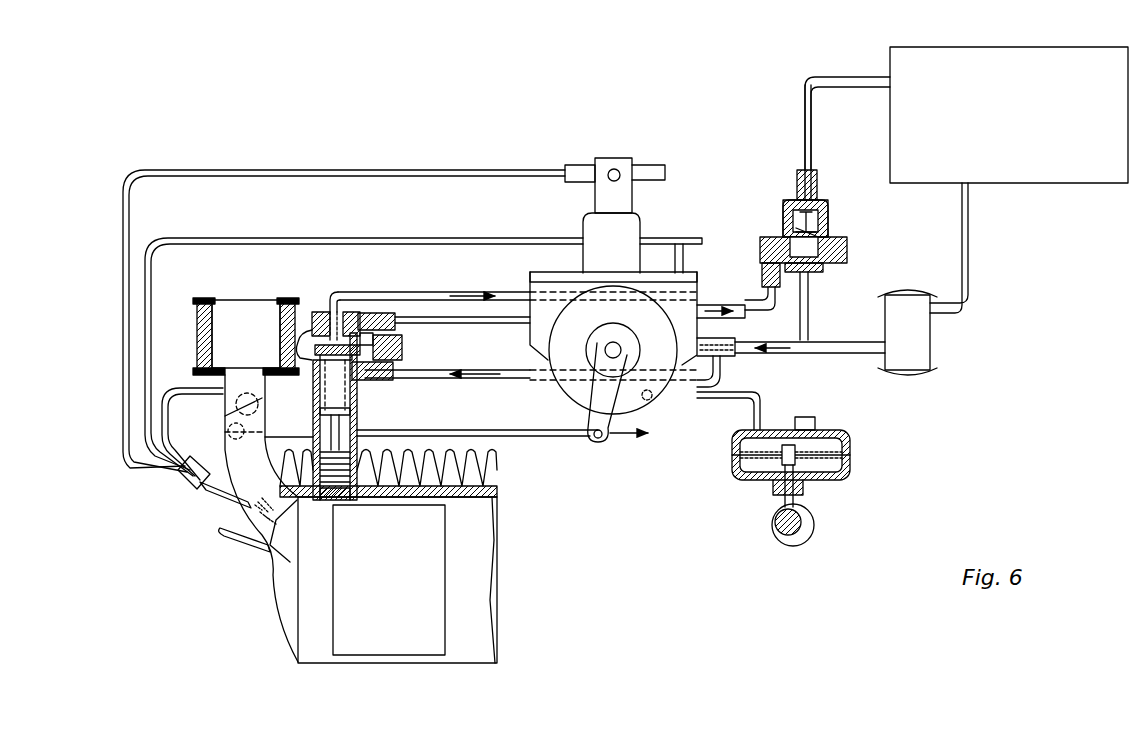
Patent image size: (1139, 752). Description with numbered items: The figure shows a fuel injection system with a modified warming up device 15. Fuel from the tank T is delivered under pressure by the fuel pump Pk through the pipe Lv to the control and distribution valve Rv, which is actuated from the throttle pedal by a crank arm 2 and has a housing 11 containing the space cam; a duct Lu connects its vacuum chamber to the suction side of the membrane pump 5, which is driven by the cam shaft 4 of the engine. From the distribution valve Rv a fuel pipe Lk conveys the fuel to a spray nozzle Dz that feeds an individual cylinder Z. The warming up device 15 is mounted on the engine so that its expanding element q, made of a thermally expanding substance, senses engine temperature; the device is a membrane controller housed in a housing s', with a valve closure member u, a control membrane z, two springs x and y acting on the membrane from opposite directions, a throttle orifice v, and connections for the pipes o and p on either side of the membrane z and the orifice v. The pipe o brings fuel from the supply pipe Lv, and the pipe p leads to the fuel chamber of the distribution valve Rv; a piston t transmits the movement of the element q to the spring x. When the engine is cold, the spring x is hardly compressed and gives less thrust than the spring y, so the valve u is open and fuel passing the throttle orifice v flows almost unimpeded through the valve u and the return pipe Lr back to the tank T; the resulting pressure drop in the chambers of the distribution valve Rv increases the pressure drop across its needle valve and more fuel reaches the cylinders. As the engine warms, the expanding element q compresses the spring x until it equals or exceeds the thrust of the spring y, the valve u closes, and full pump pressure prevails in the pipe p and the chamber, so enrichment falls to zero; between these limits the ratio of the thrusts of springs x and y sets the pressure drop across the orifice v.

The fuel pipe Lk is at (434, 172).
The control membrane z is at (310, 335).
The spring y is at (320, 312).
The valve closure member u is at (334, 322).
The warming up device 15 is at (400, 338).
The throttle orifice v is at (402, 348).
The housing s' is at (400, 355).
The pipe p is at (491, 318).
The spring x is at (360, 390).
The piston t is at (351, 413).
The pipe o is at (512, 374).
The housing 11 is at (575, 392).
The crank arm 2 is at (600, 405).
The control and distribution valve Rv is at (636, 230).
The return pipe Lr is at (773, 296).
The fuel pipe Lv is at (821, 345).
The fuel pump Pk is at (920, 352).
The tank T is at (1068, 183).
The duct Lu is at (738, 392).
The membrane pump 5 is at (850, 470).
The cam shaft 4 is at (815, 523).
The spray nozzle Dz is at (186, 482).
The expanding element q is at (330, 475).
The cylinder Z is at (305, 596).